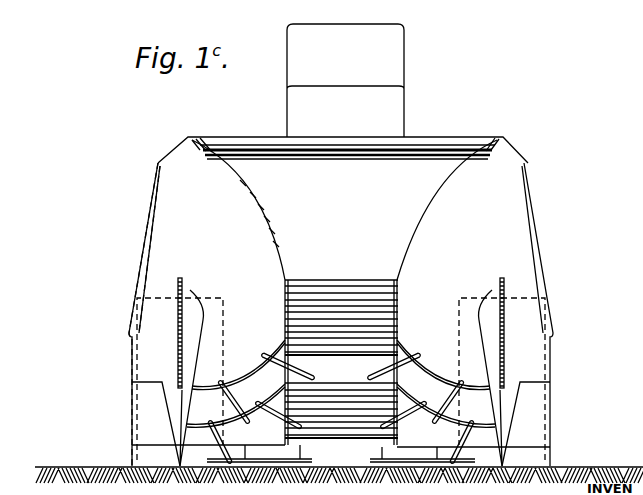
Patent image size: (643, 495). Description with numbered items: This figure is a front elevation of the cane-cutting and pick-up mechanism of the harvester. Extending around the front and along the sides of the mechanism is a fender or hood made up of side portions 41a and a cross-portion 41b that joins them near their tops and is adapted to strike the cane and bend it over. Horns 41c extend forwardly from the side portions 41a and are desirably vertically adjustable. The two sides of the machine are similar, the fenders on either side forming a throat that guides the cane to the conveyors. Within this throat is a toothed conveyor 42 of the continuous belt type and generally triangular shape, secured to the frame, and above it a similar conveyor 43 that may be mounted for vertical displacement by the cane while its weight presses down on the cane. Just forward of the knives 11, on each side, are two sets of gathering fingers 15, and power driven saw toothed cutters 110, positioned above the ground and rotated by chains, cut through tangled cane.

The side portions 41a is at (170, 213).
The cross-portion 41b is at (438, 144).
The horns 41c is at (180, 423).
The saw toothed cutters 110 is at (178, 352).
The conveyor 43 is at (343, 286).
The gathering fingers 15 is at (388, 380).
The toothed conveyor 42 is at (336, 438).
The knife 11 is at (381, 444).